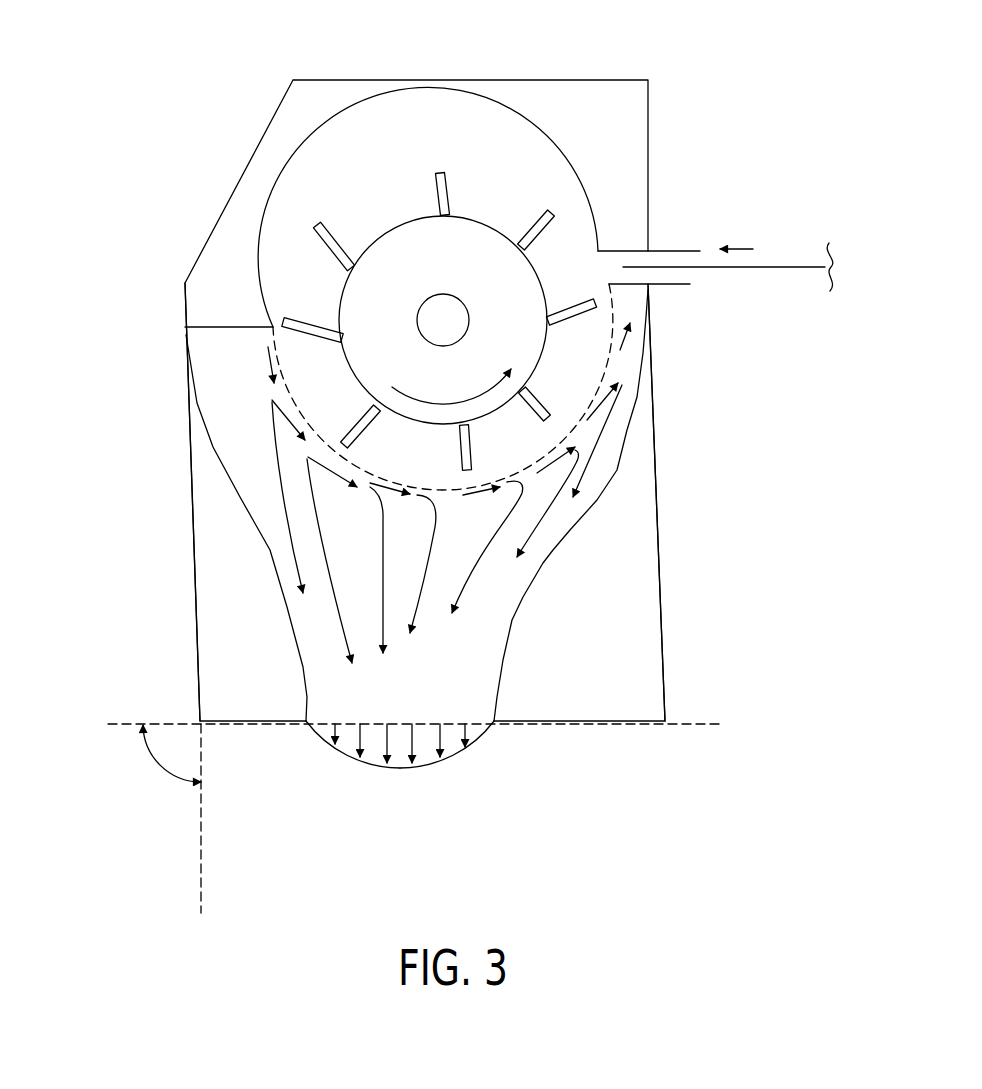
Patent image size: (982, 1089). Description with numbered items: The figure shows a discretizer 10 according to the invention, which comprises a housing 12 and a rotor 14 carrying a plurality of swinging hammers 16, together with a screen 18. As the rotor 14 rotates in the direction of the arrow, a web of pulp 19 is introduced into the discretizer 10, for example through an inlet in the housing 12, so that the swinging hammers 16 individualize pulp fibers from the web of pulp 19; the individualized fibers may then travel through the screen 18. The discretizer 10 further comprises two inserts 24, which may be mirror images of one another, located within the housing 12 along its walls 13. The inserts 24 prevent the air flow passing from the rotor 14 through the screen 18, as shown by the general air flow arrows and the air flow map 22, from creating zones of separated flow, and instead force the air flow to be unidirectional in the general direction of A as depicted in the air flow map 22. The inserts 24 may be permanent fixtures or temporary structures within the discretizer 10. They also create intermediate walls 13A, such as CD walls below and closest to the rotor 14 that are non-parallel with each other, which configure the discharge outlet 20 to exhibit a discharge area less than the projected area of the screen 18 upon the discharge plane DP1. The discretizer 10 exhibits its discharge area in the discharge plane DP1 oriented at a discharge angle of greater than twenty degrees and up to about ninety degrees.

The discretizer 10 is at (672, 120).
The housing 12 is at (553, 80).
The housing side wall 13 is at (195, 583).
The intermediate walls 13A is at (307, 696).
The rotor 14 is at (480, 247).
The swinging hammer 16 is at (545, 228).
The screen 18 is at (615, 385).
The web of pulp 19 is at (785, 267).
The discharge outlet 20 is at (325, 735).
The air flow map 22 is at (478, 738).
The inserts 24 is at (213, 535).
The general direction of air flow A is at (400, 743).
The discharge plane DP1 is at (390, 811).